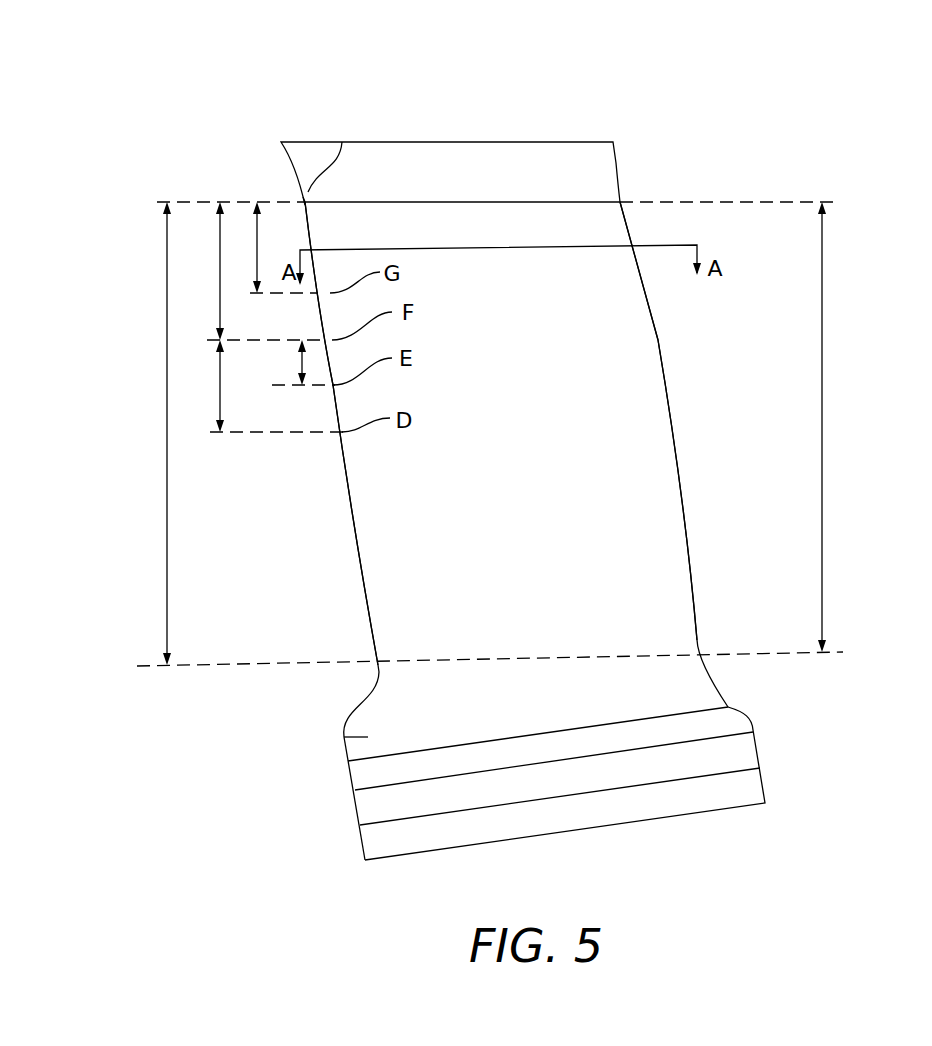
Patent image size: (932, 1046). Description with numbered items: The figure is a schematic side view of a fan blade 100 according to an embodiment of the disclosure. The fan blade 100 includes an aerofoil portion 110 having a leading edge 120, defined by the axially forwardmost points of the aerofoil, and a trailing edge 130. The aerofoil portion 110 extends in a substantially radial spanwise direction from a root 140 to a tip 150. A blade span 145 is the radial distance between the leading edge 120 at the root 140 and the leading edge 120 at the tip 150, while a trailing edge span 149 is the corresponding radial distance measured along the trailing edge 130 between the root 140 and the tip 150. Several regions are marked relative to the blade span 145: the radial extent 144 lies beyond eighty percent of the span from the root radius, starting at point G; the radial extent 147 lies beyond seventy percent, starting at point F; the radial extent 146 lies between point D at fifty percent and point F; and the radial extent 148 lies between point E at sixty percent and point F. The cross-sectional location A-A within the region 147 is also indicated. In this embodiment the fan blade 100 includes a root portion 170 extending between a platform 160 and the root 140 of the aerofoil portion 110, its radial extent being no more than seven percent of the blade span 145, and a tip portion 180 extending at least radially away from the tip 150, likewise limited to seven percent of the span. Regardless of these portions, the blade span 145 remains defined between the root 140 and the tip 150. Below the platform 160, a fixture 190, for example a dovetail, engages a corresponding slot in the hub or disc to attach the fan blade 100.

The fan blade 100 is at (600, 70).
The aerofoil portion 110 is at (648, 373).
The leading edge 120 is at (345, 457).
The trailing edge 130 is at (675, 412).
The root 140 is at (368, 663).
The radial extent 144 is at (257, 243).
The blade span 145 is at (167, 433).
The radial extent 146 is at (221, 387).
The radial extent 147 is at (220, 270).
The radial extent 148 is at (302, 362).
The trailing edge span 149 is at (822, 427).
The tip 150 is at (342, 142).
The platform 160 is at (638, 720).
The root portion 170 is at (344, 737).
The tip portion 180 is at (453, 152).
The fixture 190 is at (735, 755).